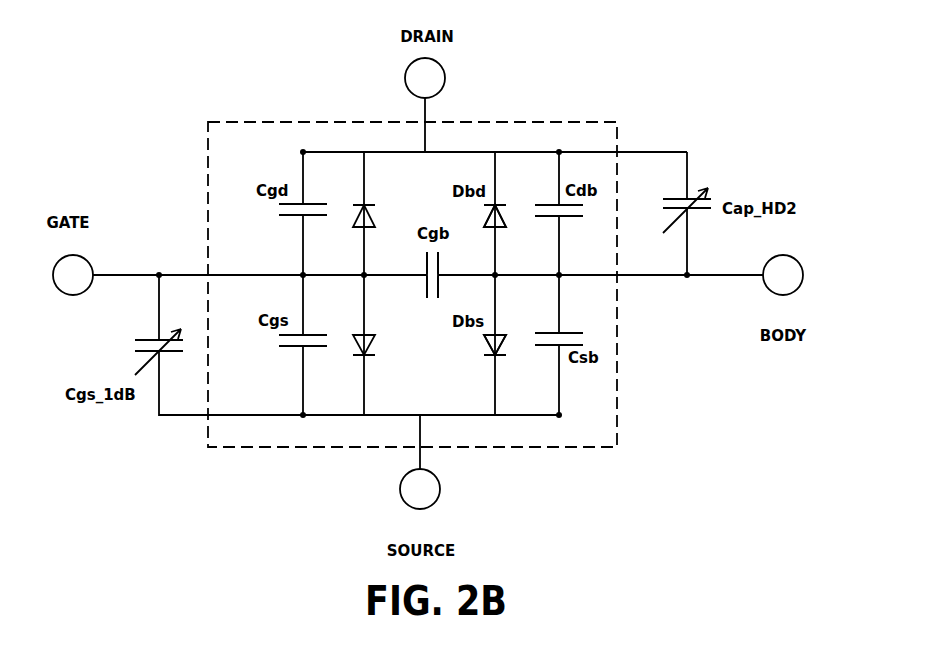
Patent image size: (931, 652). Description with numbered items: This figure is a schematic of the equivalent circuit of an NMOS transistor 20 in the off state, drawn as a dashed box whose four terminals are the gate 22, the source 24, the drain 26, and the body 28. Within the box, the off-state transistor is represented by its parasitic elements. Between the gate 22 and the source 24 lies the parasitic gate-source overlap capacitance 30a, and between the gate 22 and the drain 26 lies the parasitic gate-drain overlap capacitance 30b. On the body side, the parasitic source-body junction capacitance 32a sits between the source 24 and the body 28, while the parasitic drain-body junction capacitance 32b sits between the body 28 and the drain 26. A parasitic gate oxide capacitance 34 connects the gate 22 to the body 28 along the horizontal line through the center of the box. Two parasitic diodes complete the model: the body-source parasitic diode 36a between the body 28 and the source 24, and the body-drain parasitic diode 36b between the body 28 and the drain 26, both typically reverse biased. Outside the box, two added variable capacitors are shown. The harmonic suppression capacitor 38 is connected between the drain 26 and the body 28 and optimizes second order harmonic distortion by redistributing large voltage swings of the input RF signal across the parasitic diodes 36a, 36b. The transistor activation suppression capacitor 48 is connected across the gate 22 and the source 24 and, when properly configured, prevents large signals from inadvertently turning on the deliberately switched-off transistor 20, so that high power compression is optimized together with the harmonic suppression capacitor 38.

The transistor 20 is at (283, 447).
The gate 22 is at (70, 295).
The source 24 is at (440, 489).
The drain 26 is at (405, 76).
The body 28 is at (803, 275).
The parasitic overlap capacitance Cgs 30a is at (293, 348).
The parasitic overlap capacitance Cgd 30b is at (293, 217).
The parasitic junction capacitance Csb 32a is at (565, 331).
The parasitic junction capacitance Cdb 32b is at (563, 218).
The parasitic gate oxide capacitance Cgb 34 is at (424, 284).
The parasitic diode Dbs 36a is at (497, 334).
The parasitic diode Dbd 36b is at (498, 222).
The harmonic suppression capacitor Cap_HD2 38 is at (700, 215).
The transistor activation suppression capacitor Cgs_1dB 48 is at (150, 340).